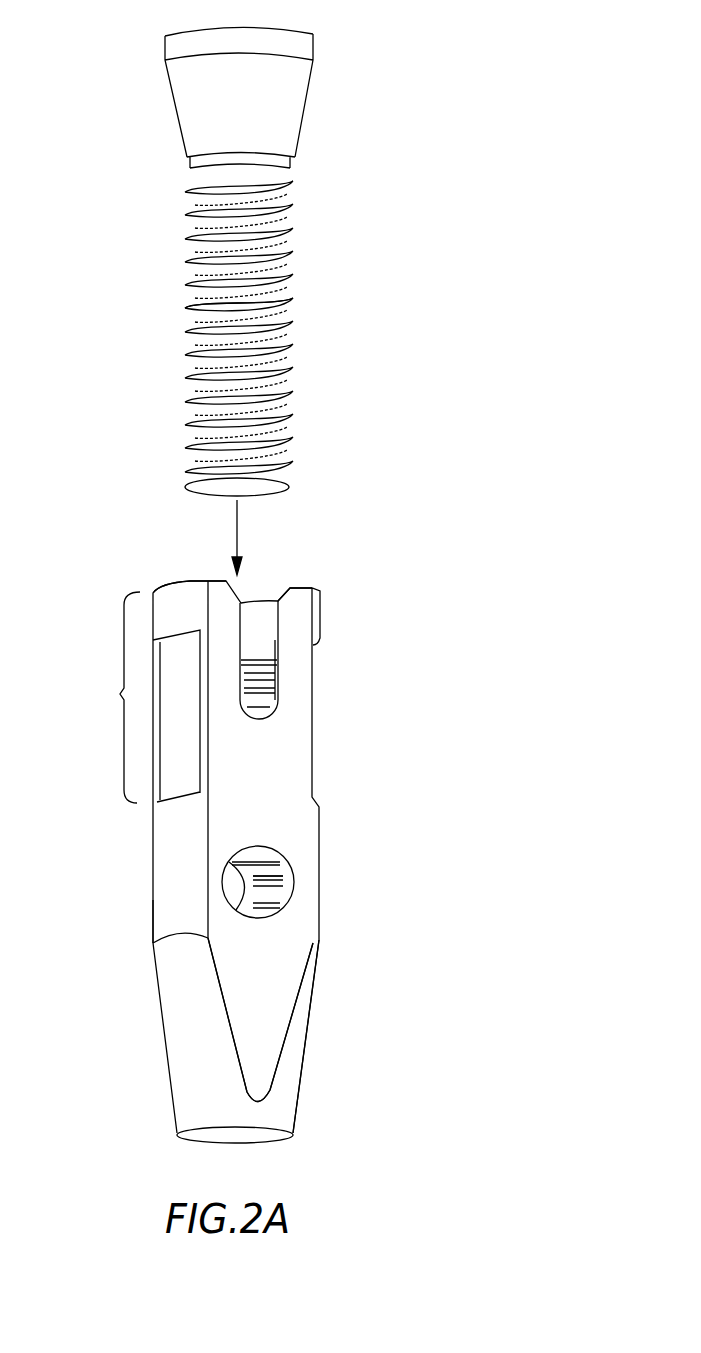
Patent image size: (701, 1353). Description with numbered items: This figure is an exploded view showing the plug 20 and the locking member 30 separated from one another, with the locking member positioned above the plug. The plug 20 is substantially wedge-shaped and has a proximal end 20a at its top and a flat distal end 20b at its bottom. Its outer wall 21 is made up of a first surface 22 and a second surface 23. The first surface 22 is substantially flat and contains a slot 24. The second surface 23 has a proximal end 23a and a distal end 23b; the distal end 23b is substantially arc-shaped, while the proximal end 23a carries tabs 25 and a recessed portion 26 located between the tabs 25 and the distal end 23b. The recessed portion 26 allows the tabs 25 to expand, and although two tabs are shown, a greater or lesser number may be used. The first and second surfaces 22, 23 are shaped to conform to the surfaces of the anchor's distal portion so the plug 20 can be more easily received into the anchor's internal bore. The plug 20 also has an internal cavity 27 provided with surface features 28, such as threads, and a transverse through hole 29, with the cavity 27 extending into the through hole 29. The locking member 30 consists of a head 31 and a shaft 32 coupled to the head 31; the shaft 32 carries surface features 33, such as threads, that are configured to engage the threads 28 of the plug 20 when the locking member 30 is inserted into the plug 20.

The plug 20 is at (232, 856).
The proximal end 20a is at (312, 590).
The flat distal end 20b is at (270, 1137).
The outer wall 21 is at (313, 993).
The first surface 22 is at (290, 942).
The second surface 23 is at (170, 868).
The proximal end 23a is at (110, 697).
The distal end 23b is at (160, 918).
The slot 24 is at (275, 688).
The tabs 25 is at (173, 597).
The recessed portion 26 is at (185, 777).
The internal cavity 27 is at (258, 878).
The surface features 28 is at (283, 882).
The transverse through hole 29 is at (238, 895).
The locking member 30 is at (257, 261).
The head 31 is at (296, 76).
The shaft 32 is at (268, 275).
The surface features 33 is at (185, 308).